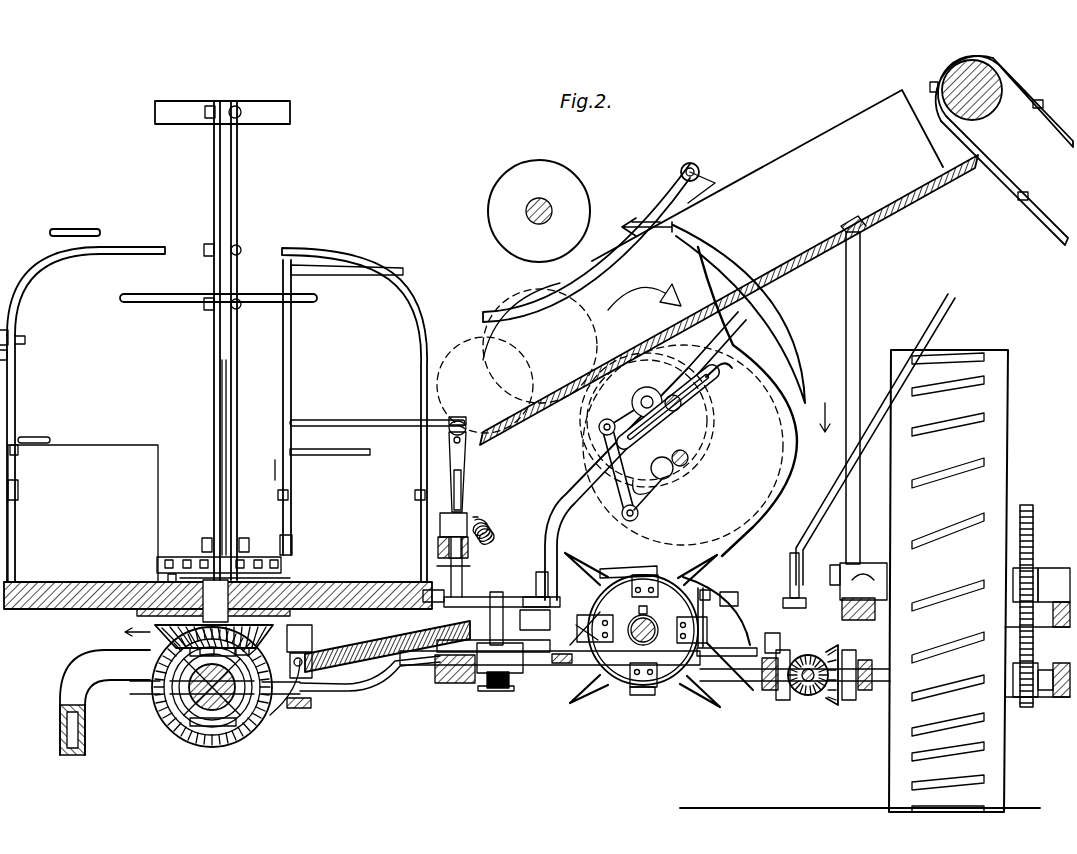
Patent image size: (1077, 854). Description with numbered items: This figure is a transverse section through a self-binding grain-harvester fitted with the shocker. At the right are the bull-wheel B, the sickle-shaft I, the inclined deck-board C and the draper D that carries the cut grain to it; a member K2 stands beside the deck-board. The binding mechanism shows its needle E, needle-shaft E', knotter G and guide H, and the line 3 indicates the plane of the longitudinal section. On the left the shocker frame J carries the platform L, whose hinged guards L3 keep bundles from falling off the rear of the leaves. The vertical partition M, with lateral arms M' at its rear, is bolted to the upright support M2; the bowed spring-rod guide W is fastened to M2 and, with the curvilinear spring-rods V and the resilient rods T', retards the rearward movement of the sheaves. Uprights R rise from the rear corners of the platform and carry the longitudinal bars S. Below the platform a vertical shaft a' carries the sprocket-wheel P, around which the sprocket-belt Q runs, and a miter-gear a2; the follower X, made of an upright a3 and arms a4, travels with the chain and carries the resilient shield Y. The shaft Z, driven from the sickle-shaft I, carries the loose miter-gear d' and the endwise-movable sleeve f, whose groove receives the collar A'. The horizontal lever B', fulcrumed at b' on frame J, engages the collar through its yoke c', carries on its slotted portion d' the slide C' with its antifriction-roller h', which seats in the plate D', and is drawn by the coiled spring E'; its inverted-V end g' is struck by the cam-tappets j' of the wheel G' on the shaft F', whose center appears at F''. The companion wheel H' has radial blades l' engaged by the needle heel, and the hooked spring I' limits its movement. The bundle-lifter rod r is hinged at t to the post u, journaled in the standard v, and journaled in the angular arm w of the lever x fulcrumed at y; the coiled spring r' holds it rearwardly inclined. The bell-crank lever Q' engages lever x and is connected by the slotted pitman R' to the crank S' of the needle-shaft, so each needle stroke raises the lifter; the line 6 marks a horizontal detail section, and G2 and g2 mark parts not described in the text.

The section line 3 is at (463, 355).
The resilient rod T' is at (217, 402).
The platform L is at (62, 582).
The upright guard L3 is at (147, 488).
The sprocket-belt Q is at (198, 551).
The sprocket-wheel P is at (172, 562).
The vertical shaft a' is at (251, 587).
The lateral arm M' is at (222, 128).
The longitudinal vertical partition M is at (230, 340).
The upright support M2 is at (220, 358).
The guide W is at (250, 298).
The curvilinear spring-rod V is at (78, 232).
The longitudinal bar S is at (237, 433).
The upright R is at (216, 499).
The follower upright a3 is at (288, 390).
The follower arm a4 is at (340, 272).
The resilient shield Y is at (272, 470).
The follower X is at (288, 497).
The miter-gear a2 is at (170, 636).
The short longitudinal shaft Z is at (208, 693).
The collar A' is at (211, 694).
The loose miter-gear d' is at (358, 714).
The endwise-movable sleeve f is at (243, 722).
The yoke c' is at (284, 723).
The horizontal lever B' is at (250, 702).
The fulcrum b' is at (296, 690).
The longitudinal shaft F' is at (526, 383).
The angular arm w is at (465, 470).
The rod r is at (473, 490).
The hinge connection t is at (470, 514).
The coiled spring r' is at (500, 530).
The fulcrum y is at (440, 545).
The vertical post u is at (452, 569).
The standard v is at (466, 582).
The lever x is at (472, 587).
The section line 6 is at (550, 592).
The bell-crank lever Q' is at (540, 621).
The slide C' is at (493, 683).
The plate D' is at (447, 696).
The antifriction-roller h' is at (488, 714).
The needle-shaft E' is at (567, 471).
The needle E is at (742, 364).
The main frame of the shocker J is at (548, 672).
The inner reduced end g' is at (573, 679).
The wheel G' is at (642, 642).
The hub F'' is at (629, 667).
The cam-tappet j' is at (628, 557).
The radial blade l' is at (717, 607).
The slotted pitman R' is at (645, 456).
The crank S' is at (674, 442).
The knotter G is at (539, 220).
The guide H is at (591, 242).
The deck-board C is at (729, 327).
The draper D is at (1001, 150).
The brace K2 is at (940, 328).
The bull-wheel B is at (948, 581).
The sickle-shaft I is at (813, 684).
The wheel H' is at (793, 671).
The block G2 is at (746, 640).
The spring I' is at (716, 611).
The rod g2 is at (812, 570).